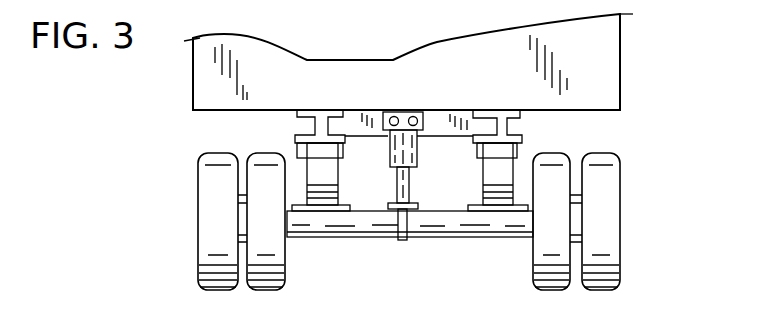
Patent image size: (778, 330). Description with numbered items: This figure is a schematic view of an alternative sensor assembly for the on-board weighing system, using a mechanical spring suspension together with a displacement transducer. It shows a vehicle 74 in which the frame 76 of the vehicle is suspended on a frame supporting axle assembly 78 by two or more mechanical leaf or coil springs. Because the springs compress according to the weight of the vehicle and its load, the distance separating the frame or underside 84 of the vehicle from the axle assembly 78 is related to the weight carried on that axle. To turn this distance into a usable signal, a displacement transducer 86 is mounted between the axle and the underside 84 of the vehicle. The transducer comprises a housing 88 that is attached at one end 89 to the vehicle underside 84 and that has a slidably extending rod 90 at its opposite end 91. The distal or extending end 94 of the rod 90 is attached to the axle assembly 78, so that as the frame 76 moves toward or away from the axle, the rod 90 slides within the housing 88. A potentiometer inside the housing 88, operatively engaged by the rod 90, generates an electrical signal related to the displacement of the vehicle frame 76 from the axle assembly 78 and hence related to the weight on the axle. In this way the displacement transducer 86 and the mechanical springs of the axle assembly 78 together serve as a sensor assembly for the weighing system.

The vehicle 74 is at (618, 47).
The frame 76 is at (520, 118).
The axle assembly 78 is at (500, 238).
The underside 84 is at (360, 123).
The displacement transducer 86 is at (430, 127).
The housing 88 is at (417, 148).
The one end 89 is at (398, 112).
The rod 90 is at (412, 183).
The opposite end 91 is at (390, 172).
The distal or extending end 94 is at (394, 211).